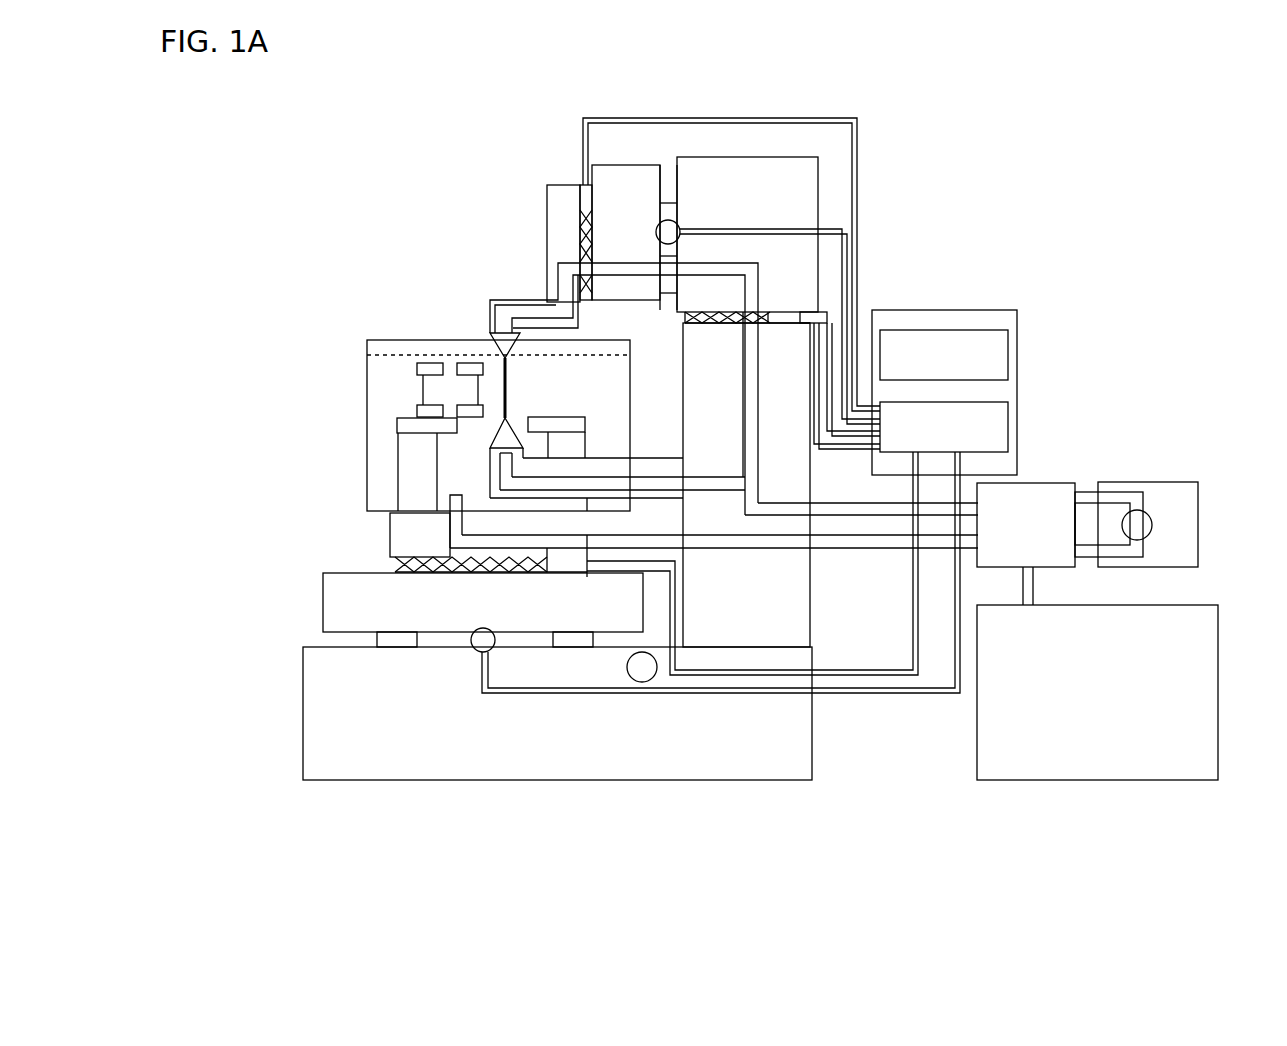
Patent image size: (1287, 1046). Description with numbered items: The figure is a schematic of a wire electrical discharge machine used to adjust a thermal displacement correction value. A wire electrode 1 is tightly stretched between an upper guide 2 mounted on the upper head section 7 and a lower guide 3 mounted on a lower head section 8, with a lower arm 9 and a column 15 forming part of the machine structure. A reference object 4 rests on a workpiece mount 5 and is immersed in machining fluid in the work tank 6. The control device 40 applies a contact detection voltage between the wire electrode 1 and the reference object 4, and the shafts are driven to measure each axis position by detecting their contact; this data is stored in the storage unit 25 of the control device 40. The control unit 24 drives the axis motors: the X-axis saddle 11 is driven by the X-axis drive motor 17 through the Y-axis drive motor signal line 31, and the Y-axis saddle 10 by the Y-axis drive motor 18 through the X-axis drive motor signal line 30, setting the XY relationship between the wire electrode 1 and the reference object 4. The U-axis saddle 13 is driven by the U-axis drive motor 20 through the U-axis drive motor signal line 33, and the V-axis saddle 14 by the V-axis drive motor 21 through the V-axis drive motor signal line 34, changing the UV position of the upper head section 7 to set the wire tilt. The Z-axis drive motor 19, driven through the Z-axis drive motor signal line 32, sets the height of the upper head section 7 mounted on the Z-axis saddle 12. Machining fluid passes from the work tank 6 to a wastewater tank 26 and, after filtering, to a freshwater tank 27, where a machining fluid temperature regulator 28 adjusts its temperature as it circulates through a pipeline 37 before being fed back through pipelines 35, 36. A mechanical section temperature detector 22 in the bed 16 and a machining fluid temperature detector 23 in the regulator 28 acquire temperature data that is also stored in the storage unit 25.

The wire electrode 1 is at (509, 385).
The upper guide 2 is at (490, 334).
The lower guide 3 is at (492, 438).
The reference object 4 is at (417, 367).
The workpiece mount 5 is at (397, 425).
The work tank 6 is at (367, 472).
The upper head section 7 is at (498, 297).
The lower head section 8 is at (490, 470).
The lower arm 9 is at (600, 455).
The Y-axis saddle 10 is at (390, 536).
The X-axis saddle 11 is at (323, 600).
The Z-axis saddle 12 is at (547, 228).
The U-axis saddle 13 is at (598, 172).
The V-axis saddle 14 is at (820, 182).
The column 15 is at (683, 395).
The bed 16 is at (812, 755).
The X-axis drive motor 17 is at (478, 652).
The Y-axis drive motor 18 is at (590, 557).
The Z-axis drive motor 19 is at (580, 197).
The U-axis drive motor 20 is at (668, 163).
The V-axis drive motor 21 is at (812, 318).
The mechanical section temperature detector 22 is at (627, 667).
The machining fluid temperature detector 23 is at (1150, 510).
The control unit 24 is at (1010, 422).
The storage unit 25 is at (1010, 352).
The wastewater tank 26 is at (1218, 685).
The freshwater tank 27 is at (1055, 570).
The machining fluid temperature regulator 28 is at (1198, 520).
The X-axis drive motor signal line 30 is at (912, 622).
The Y-axis drive motor signal line 31 is at (912, 695).
The Z-axis drive motor signal line 32 is at (860, 126).
The U-axis drive motor signal line 33 is at (852, 254).
The V-axis drive motor signal line 34 is at (850, 455).
The pipeline 35 is at (795, 503).
The pipeline 36 is at (858, 549).
The pipeline 37 is at (1110, 490).
The control device 40 is at (1017, 312).